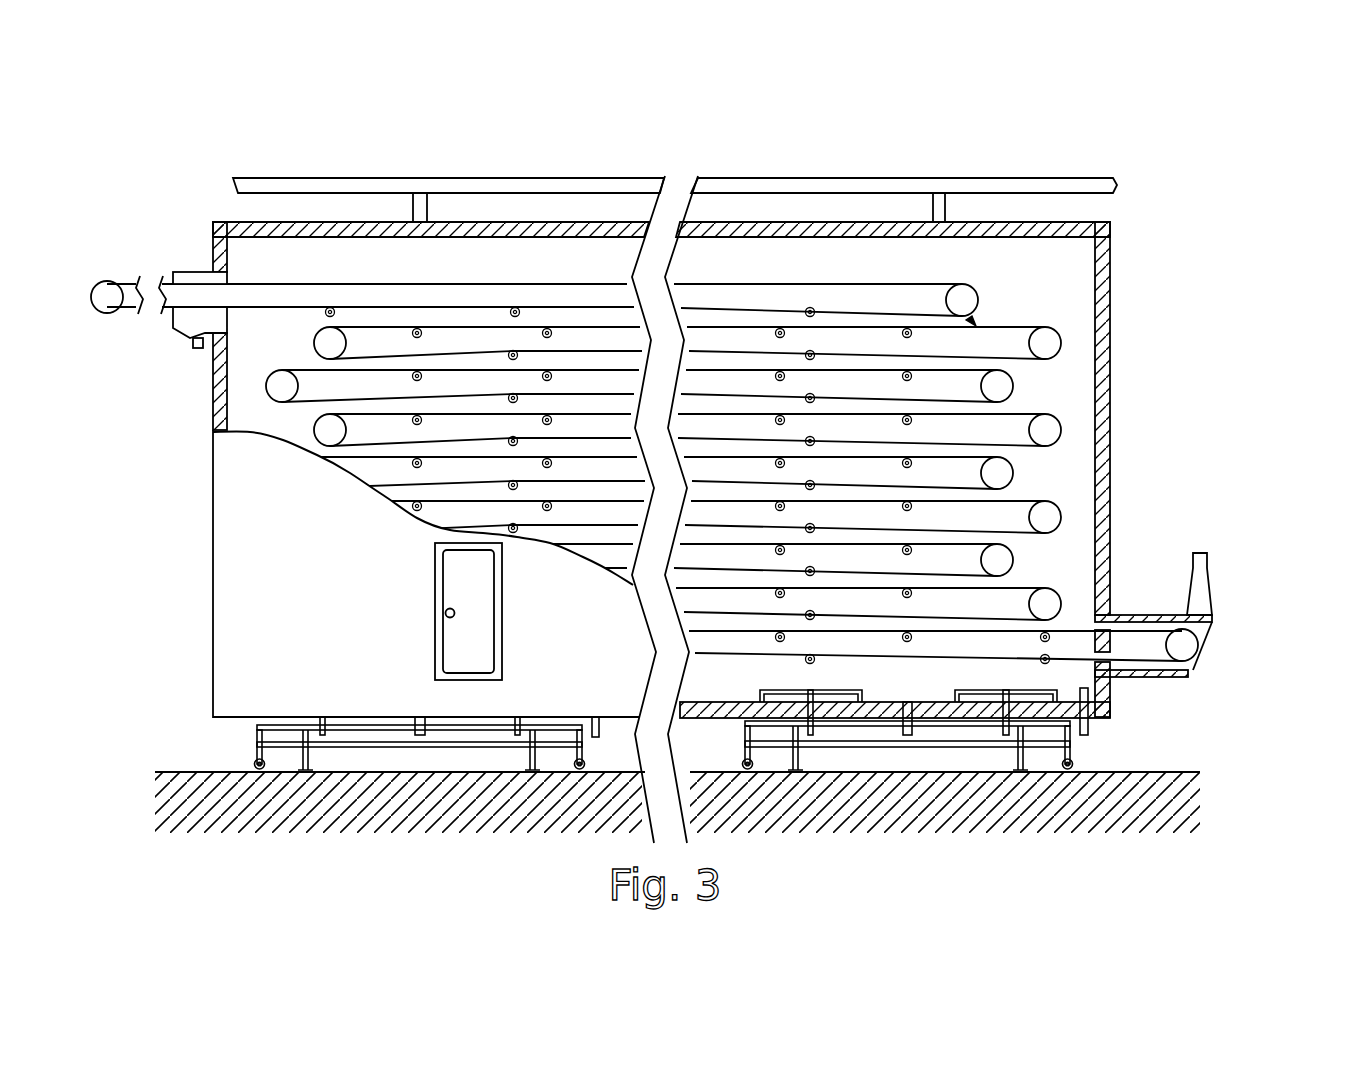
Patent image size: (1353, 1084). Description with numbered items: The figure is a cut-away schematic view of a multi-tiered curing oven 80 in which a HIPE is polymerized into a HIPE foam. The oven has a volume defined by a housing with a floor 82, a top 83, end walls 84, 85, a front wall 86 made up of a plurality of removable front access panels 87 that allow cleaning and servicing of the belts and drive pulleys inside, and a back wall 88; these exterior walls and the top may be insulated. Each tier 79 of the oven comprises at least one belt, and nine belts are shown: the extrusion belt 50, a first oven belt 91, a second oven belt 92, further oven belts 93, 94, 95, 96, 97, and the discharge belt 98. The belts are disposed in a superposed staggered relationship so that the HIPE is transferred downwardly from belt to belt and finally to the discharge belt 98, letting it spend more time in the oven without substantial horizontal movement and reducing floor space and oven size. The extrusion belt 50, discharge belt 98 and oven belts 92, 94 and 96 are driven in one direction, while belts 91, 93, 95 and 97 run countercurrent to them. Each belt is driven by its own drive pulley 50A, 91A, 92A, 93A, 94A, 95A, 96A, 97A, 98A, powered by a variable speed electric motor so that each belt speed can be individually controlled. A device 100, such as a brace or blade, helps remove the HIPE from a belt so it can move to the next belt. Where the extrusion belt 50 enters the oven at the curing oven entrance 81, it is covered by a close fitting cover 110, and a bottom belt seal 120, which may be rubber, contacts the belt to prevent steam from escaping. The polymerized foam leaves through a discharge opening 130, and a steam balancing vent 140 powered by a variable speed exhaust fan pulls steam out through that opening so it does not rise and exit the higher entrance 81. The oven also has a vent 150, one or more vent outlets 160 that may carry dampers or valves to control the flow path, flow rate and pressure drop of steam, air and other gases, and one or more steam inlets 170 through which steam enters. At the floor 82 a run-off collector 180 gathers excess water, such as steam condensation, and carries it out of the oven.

The extrusion belt 50 is at (127, 282).
The drive pulley 50A is at (980, 300).
The tier 79 is at (203, 358).
The multi-tiered curing oven 80 is at (550, 145).
The curing oven entrance 81 is at (222, 305).
The floor 82 is at (950, 720).
The top 83 is at (315, 222).
The end wall 84 is at (212, 600).
The end wall 85 is at (1112, 238).
The front wall 86 is at (250, 637).
The removable front access panel 87 is at (458, 647).
The back wall 88 is at (1030, 290).
The first oven belt 91 is at (1003, 324).
The drive pulley 91A is at (1050, 337).
The second oven belt 92 is at (1003, 368).
The drive pulley 92A is at (1008, 394).
The oven belt 93 is at (1003, 417).
The drive pulley 93A is at (1047, 430).
The oven belt 94 is at (1003, 460).
The drive pulley 94A is at (1003, 473).
The oven belt 95 is at (1003, 504).
The drive pulley 95A is at (1047, 517).
The oven belt 96 is at (1003, 547).
The drive pulley 96A is at (1003, 560).
The oven belt 97 is at (1003, 590).
The drive pulley 97A is at (1048, 605).
The discharge belt 98 is at (1197, 640).
The drive pulley 98A is at (1183, 650).
The device 100 is at (1112, 258).
The close fitting cover 110 is at (190, 272).
The bottom belt seal 120 is at (172, 322).
The discharge opening 130 is at (1115, 662).
The steam balancing vent 140 is at (1213, 602).
The vent 150 is at (785, 178).
The vent outlet 160 is at (930, 207).
The steam inlet 170 is at (828, 692).
The run-off collector 180 is at (912, 735).